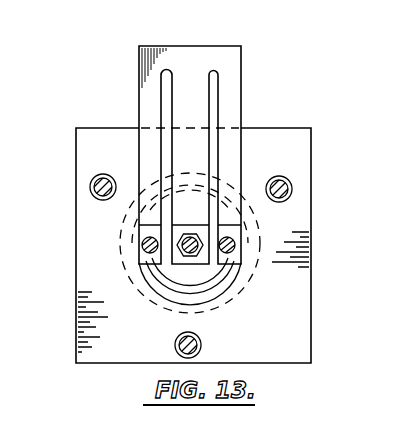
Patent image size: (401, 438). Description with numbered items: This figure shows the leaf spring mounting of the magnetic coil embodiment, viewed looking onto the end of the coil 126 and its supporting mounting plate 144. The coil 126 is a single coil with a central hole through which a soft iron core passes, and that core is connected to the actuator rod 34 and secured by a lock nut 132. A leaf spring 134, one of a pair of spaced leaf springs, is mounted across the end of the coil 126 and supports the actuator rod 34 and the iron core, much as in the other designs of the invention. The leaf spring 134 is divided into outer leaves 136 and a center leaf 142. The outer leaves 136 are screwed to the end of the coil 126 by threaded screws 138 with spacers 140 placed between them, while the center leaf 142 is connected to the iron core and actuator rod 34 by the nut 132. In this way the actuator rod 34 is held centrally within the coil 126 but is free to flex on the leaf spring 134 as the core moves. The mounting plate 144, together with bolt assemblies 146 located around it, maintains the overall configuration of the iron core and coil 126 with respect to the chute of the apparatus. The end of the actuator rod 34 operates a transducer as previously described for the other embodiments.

The leaf spring 134 is at (242, 47).
The center leaf 142 is at (200, 97).
The outer leaves 136 is at (139, 100).
The mounting plate 144 is at (316, 137).
The bolt assemblies 146 is at (91, 191).
The lock nut 132 is at (196, 232).
The threaded screws 138 is at (140, 241).
The spacers 140 is at (140, 230).
The actuator rod 34 is at (178, 260).
The coil 126 is at (123, 306).